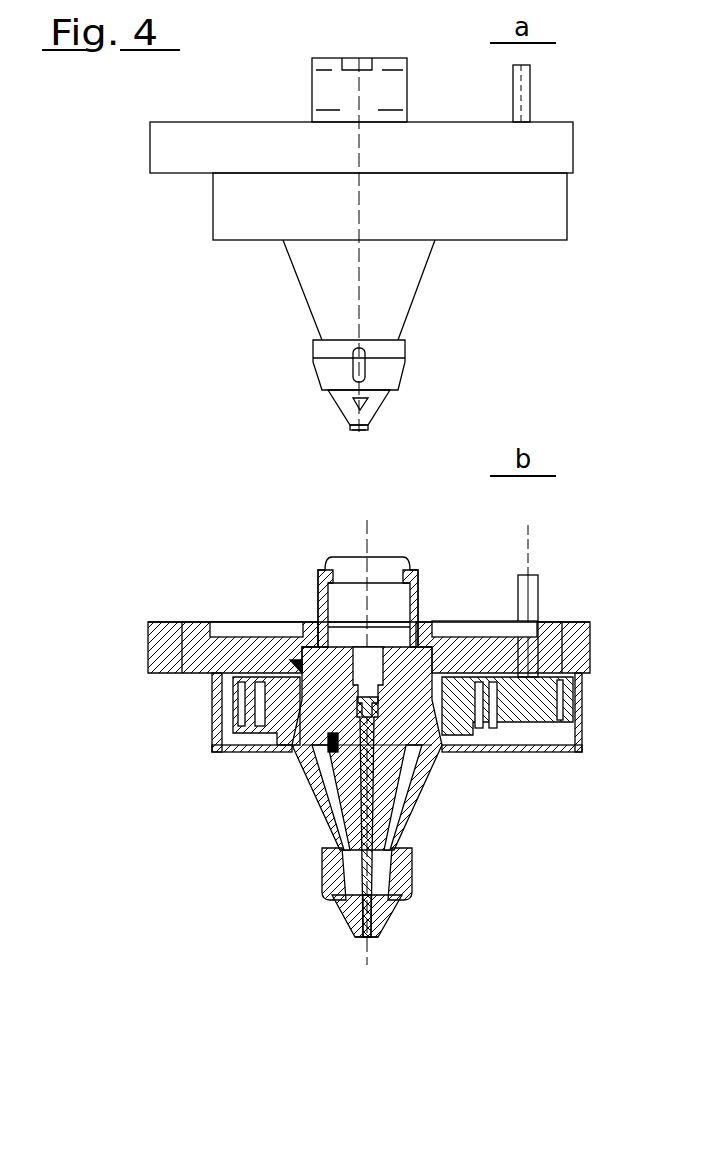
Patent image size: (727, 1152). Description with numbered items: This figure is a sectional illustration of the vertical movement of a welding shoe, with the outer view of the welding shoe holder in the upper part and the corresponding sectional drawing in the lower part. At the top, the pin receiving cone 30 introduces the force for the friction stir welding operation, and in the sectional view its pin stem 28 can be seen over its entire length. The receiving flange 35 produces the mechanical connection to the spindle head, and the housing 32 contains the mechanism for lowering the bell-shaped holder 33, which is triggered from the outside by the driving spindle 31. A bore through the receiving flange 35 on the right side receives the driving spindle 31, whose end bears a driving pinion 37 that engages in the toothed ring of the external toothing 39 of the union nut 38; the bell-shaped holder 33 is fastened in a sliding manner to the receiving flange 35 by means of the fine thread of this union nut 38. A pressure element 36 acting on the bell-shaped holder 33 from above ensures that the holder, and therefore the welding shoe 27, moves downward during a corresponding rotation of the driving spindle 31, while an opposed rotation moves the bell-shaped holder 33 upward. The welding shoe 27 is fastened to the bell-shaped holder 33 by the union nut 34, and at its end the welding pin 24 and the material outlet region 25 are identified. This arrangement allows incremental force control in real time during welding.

The welding pin 24 is at (358, 428).
The material outlet region 25 is at (355, 400).
The welding shoe 27 is at (380, 405).
The pin stem 28 is at (370, 795).
The pin receiving cone 30 is at (325, 82).
The driving spindle 31 is at (530, 90).
The housing 32 is at (547, 208).
The bell-shaped holder 33 is at (398, 283).
The union nut 34 is at (322, 370).
The receiving flange 35 is at (207, 157).
The pressure element 36 is at (292, 667).
The driving pinion 37 is at (547, 703).
The union nut 38 is at (263, 728).
The external toothing 39 is at (218, 733).